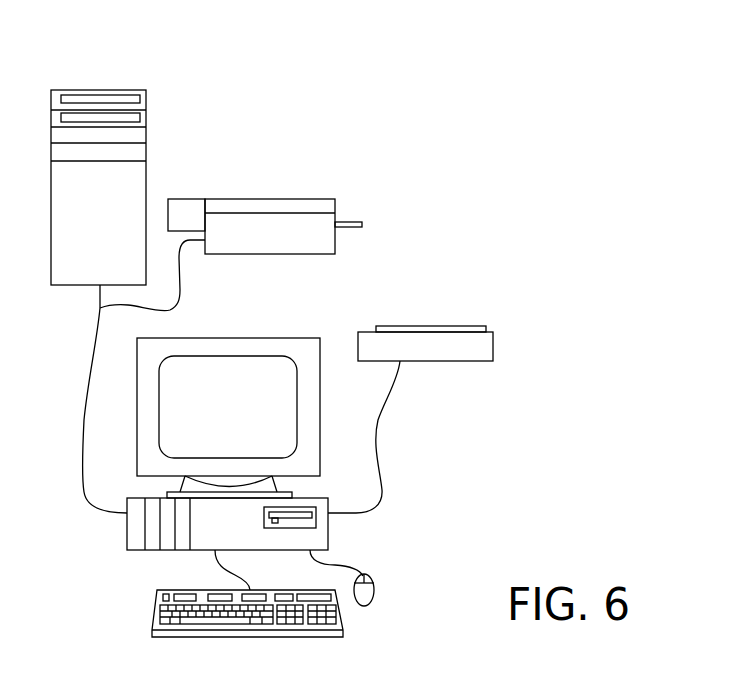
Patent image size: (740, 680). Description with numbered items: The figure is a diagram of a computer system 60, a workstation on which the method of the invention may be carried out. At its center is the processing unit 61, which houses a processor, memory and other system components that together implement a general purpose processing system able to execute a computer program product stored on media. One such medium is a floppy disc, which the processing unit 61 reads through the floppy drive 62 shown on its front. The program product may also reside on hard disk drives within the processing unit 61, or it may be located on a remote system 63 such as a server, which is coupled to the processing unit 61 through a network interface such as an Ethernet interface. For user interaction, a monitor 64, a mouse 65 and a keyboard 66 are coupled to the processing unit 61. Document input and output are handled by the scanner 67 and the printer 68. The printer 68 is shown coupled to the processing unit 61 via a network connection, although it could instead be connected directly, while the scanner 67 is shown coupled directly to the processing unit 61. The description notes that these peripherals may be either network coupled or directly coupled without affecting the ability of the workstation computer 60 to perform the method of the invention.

The computer system 60 is at (442, 130).
The processing unit 61 is at (127, 532).
The floppy drive 62 is at (322, 498).
The remote system 63 is at (146, 176).
The monitor 64 is at (284, 338).
The mouse 65 is at (367, 606).
The keyboard 66 is at (152, 610).
The scanner 67 is at (308, 199).
The printer 68 is at (455, 326).